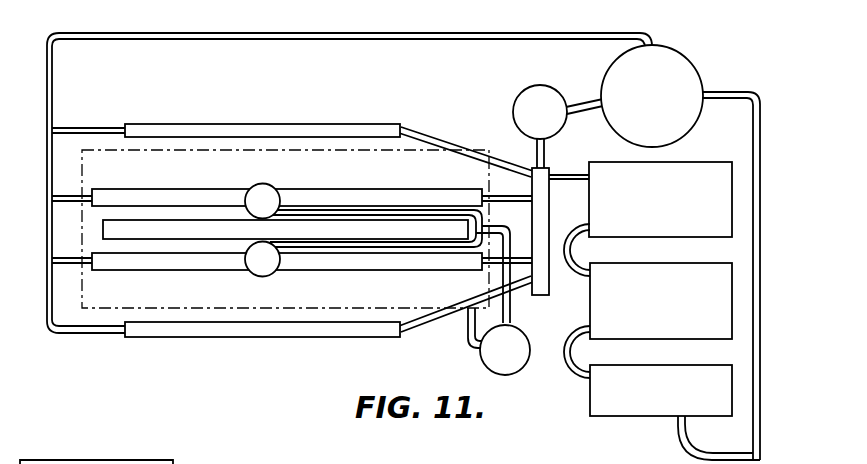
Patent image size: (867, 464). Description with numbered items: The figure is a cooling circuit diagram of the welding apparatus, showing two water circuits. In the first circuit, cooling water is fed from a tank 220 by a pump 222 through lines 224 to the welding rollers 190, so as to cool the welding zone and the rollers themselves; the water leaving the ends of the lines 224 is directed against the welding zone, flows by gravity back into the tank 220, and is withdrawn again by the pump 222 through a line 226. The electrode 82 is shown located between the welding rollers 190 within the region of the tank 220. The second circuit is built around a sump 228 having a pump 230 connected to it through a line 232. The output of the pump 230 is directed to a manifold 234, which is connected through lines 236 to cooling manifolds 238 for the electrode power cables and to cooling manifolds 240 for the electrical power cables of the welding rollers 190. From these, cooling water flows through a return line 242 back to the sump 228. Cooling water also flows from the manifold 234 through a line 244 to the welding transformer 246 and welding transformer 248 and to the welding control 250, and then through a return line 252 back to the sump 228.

The electrode 82 is at (96, 231).
The welding rollers 190 is at (268, 194).
The tank 220 is at (92, 309).
The pump 222 is at (512, 372).
The lines 224 is at (327, 213).
The line 226 is at (468, 327).
The sump 228 is at (675, 63).
The pump 230 is at (545, 90).
The line 232 is at (578, 100).
The manifold 234 is at (552, 229).
The lines 236 is at (420, 137).
The cooling manifolds 238 is at (300, 110).
The cooling manifolds 240 is at (238, 188).
The return line 242 is at (318, 33).
The line 244 is at (565, 172).
The transformer no. 1 246 is at (647, 263).
The welding transformer 248 is at (677, 162).
The welding control 250 is at (640, 418).
The return line 252 is at (753, 434).